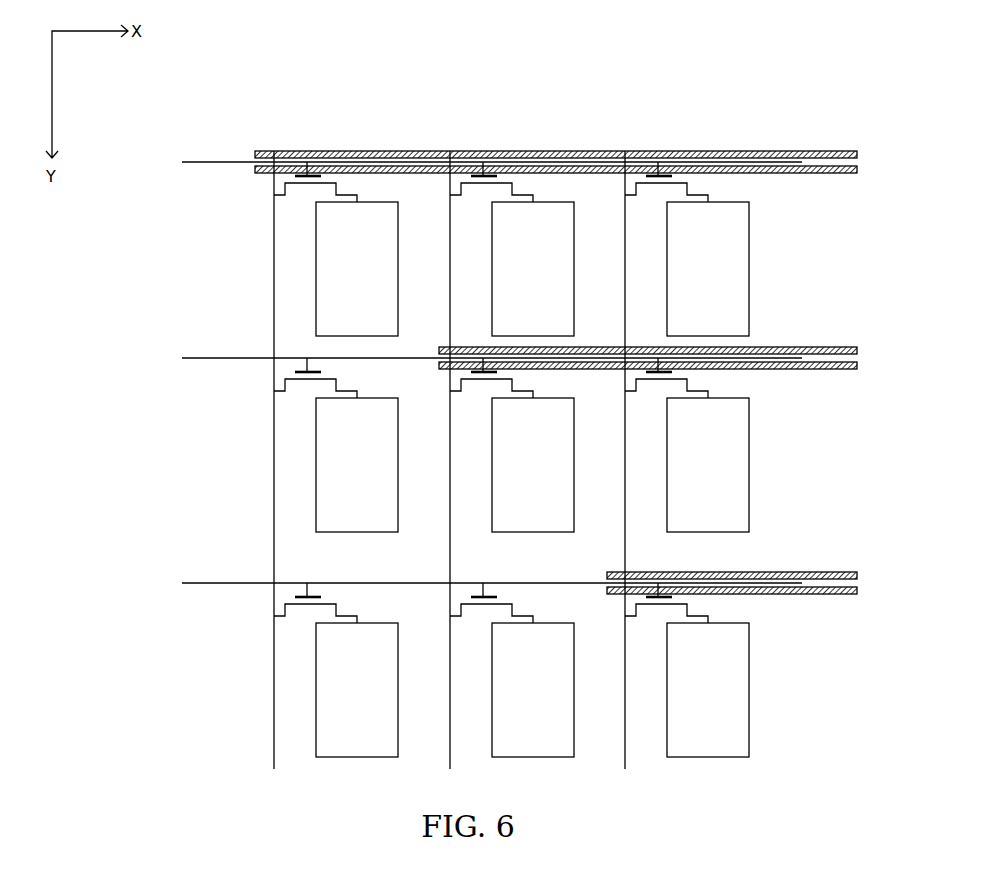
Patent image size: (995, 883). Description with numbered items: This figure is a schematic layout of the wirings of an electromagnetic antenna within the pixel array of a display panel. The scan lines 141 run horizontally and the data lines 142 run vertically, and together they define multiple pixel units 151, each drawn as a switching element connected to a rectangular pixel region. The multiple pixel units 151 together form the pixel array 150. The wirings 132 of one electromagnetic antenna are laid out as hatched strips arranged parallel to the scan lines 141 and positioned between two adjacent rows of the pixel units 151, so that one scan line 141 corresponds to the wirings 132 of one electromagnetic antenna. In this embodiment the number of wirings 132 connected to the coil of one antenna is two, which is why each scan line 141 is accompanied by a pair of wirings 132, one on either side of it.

The pixel array 150 is at (353, 123).
The wirings 132 is at (437, 160).
The scan line 141 is at (213, 162).
The data line 142 is at (274, 295).
The pixel unit 151 is at (290, 247).